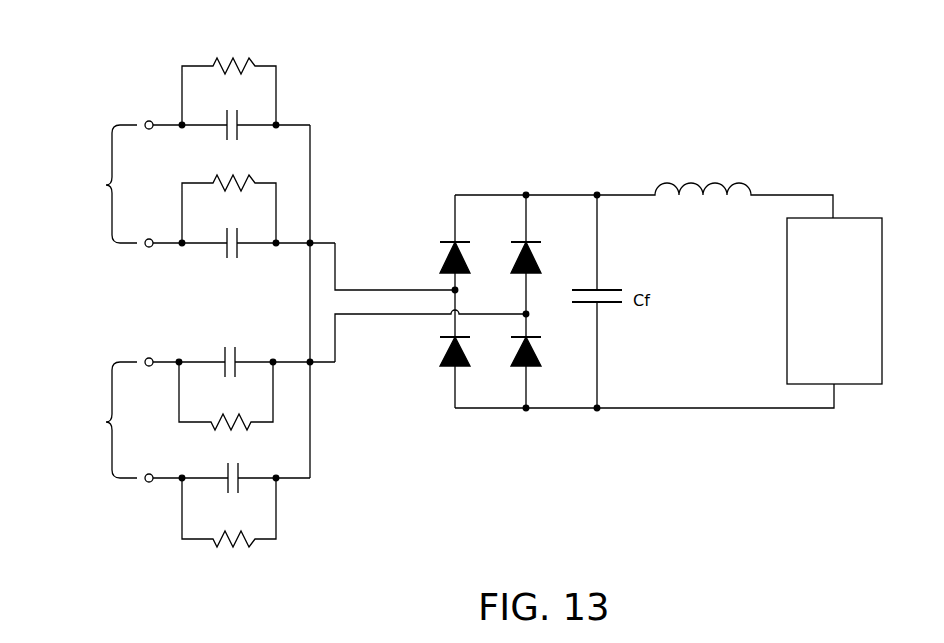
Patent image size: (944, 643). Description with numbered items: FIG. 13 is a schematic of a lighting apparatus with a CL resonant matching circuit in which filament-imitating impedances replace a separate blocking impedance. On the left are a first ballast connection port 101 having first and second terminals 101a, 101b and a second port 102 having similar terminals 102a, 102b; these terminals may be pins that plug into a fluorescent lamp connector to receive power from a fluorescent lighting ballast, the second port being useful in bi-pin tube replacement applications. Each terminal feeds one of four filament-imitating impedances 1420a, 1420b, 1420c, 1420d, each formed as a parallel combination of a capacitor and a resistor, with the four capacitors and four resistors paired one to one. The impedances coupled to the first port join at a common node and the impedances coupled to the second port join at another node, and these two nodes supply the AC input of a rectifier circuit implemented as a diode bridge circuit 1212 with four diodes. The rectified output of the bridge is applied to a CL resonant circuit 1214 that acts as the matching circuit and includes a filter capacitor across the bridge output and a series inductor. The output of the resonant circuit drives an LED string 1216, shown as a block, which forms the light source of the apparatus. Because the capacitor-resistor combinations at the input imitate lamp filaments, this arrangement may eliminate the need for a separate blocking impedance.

The ballast connection port 101 is at (101, 184).
The first terminal 101a is at (160, 137).
The second terminal 101b is at (158, 265).
The second port 102 is at (101, 420).
The terminal 102a is at (160, 340).
The terminal 102b is at (160, 461).
The filament-imitating impedance 1420a is at (299, 58).
The filament-imitating impedance 1420b is at (339, 189).
The filament-imitating impedance 1420c is at (324, 424).
The filament-imitating impedance 1420d is at (270, 564).
The diode bridge circuit 1212 is at (509, 176).
The CL resonant circuit 1214 is at (725, 146).
The LED string 1216 is at (786, 302).